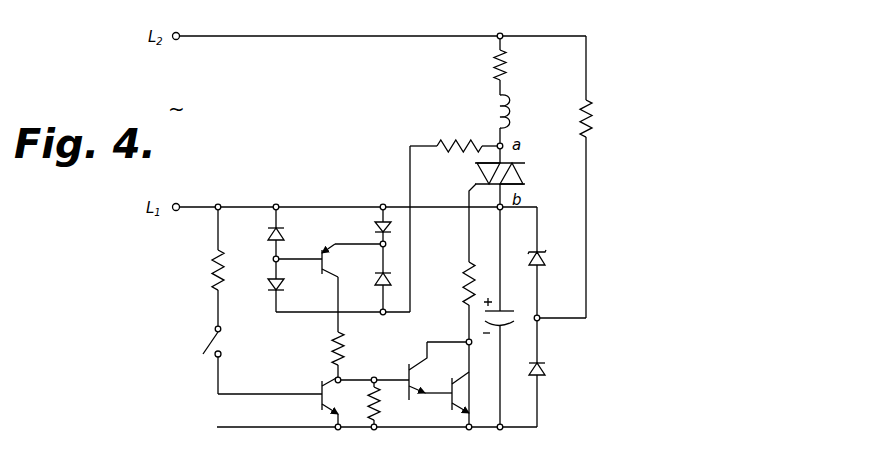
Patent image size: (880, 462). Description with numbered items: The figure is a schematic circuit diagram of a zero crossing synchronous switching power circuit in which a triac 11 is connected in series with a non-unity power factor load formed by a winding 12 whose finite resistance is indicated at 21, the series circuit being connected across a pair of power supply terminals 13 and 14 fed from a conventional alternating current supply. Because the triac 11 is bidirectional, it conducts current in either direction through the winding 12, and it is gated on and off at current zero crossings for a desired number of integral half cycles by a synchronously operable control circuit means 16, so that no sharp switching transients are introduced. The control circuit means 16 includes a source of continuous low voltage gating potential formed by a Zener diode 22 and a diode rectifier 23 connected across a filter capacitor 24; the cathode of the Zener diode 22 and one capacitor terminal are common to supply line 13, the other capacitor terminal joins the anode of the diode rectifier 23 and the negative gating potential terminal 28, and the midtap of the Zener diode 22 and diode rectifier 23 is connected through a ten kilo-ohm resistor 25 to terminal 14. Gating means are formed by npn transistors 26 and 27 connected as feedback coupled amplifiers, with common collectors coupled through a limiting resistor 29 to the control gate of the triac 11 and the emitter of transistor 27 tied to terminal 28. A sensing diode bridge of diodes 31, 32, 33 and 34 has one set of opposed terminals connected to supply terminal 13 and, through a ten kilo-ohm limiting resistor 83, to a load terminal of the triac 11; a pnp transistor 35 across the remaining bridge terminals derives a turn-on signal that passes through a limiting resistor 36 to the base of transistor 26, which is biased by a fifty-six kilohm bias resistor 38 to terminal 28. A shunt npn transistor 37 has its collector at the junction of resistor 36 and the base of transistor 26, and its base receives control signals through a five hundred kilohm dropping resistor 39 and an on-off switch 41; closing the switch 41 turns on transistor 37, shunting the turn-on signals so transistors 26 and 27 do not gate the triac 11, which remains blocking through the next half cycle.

The triac 11 is at (525, 164).
The winding 12 is at (511, 113).
The power supply terminal 13 is at (202, 206).
The power supply terminal 14 is at (338, 36).
The synchronously operable control circuit means 16 is at (434, 325).
The resistance 21 is at (510, 69).
The Zener diode 22 is at (542, 253).
The diode rectifier 23 is at (547, 370).
The filter capacitor 24 is at (508, 310).
The resistor 25 is at (596, 123).
The transistor 26 is at (407, 369).
The transistor 27 is at (450, 400).
The low voltage direct current gating potential terminal 28 is at (418, 428).
The limiting resistor 29 is at (463, 272).
The diode 31 is at (267, 234).
The diode 32 is at (270, 292).
The diode 33 is at (376, 228).
The diode 34 is at (378, 283).
The transistor 35 is at (323, 250).
The limiting resistor 36 is at (331, 349).
The transistor 37 is at (319, 384).
The bias resistor 38 is at (381, 405).
The dropping resistor 39 is at (211, 265).
The on-off switch 41 is at (212, 341).
The limiting resistor 83 is at (452, 140).